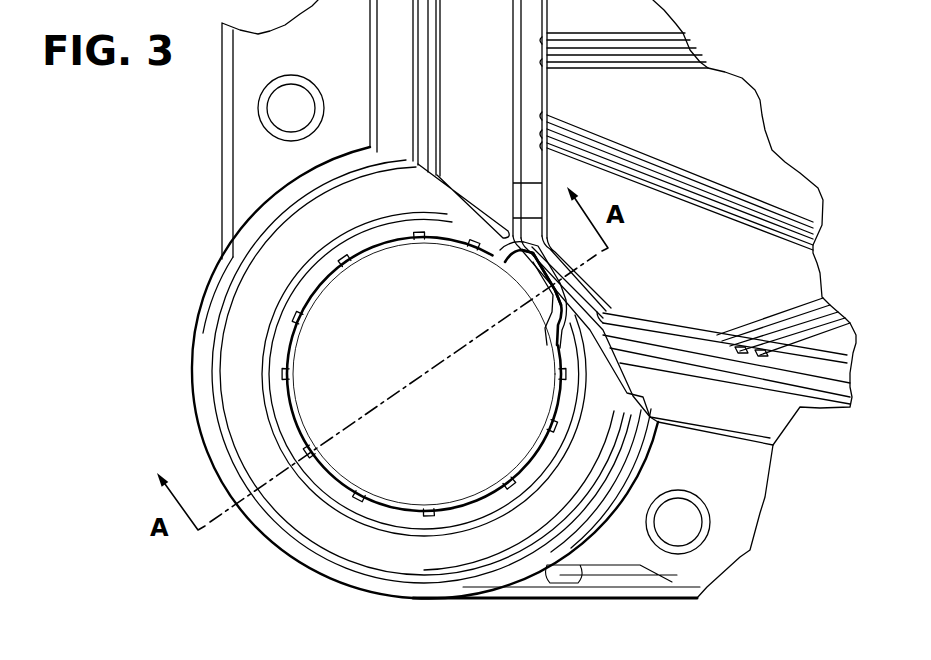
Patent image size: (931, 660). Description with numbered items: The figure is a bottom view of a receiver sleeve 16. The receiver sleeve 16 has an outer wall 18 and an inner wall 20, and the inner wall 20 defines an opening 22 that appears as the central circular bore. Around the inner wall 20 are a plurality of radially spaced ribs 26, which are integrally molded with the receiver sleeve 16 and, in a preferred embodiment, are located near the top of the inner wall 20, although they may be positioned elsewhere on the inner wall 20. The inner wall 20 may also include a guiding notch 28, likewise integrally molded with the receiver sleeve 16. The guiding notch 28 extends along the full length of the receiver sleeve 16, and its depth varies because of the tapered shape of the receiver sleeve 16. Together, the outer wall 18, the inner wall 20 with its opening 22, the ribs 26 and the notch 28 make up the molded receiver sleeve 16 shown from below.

The receiver sleeve 16 is at (243, 306).
The outer wall 18 is at (188, 378).
The inner wall 20 is at (323, 290).
The opening 22 is at (414, 363).
The ribs 26 is at (316, 454).
The guiding notch 28 is at (545, 296).